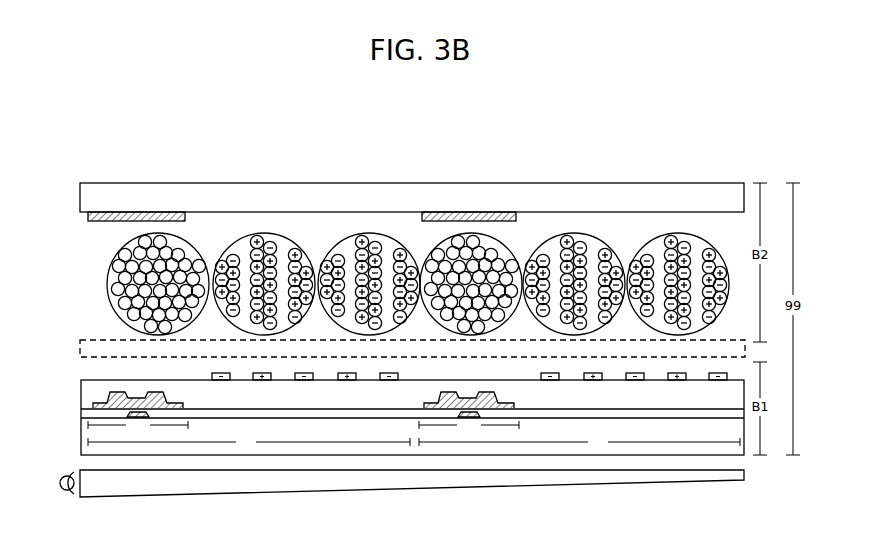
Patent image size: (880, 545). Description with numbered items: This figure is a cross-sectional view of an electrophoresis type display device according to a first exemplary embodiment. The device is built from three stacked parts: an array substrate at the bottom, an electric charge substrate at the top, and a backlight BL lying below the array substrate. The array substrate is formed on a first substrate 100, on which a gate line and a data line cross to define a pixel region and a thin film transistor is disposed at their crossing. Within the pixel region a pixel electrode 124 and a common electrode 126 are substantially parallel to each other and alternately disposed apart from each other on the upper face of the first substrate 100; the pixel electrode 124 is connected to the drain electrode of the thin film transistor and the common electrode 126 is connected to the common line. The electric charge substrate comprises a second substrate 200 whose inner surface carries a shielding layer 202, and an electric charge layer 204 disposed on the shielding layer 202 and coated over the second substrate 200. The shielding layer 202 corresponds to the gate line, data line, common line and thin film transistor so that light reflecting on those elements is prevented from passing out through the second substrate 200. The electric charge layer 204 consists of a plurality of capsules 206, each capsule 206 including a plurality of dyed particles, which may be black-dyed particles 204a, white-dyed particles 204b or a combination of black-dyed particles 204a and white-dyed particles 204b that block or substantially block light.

The second substrate 200 is at (412, 197).
The shielding layer 202 is at (147, 213).
The electric charge layer 204 is at (373, 237).
The black-dyed particles 204a is at (418, 237).
The white-dyed particles 204b is at (392, 236).
The capsule 206 is at (418, 237).
The first substrate 100 is at (412, 417).
The pixel electrode 124 is at (469, 360).
The common electrode 126 is at (303, 372).
The backlight BL is at (745, 475).